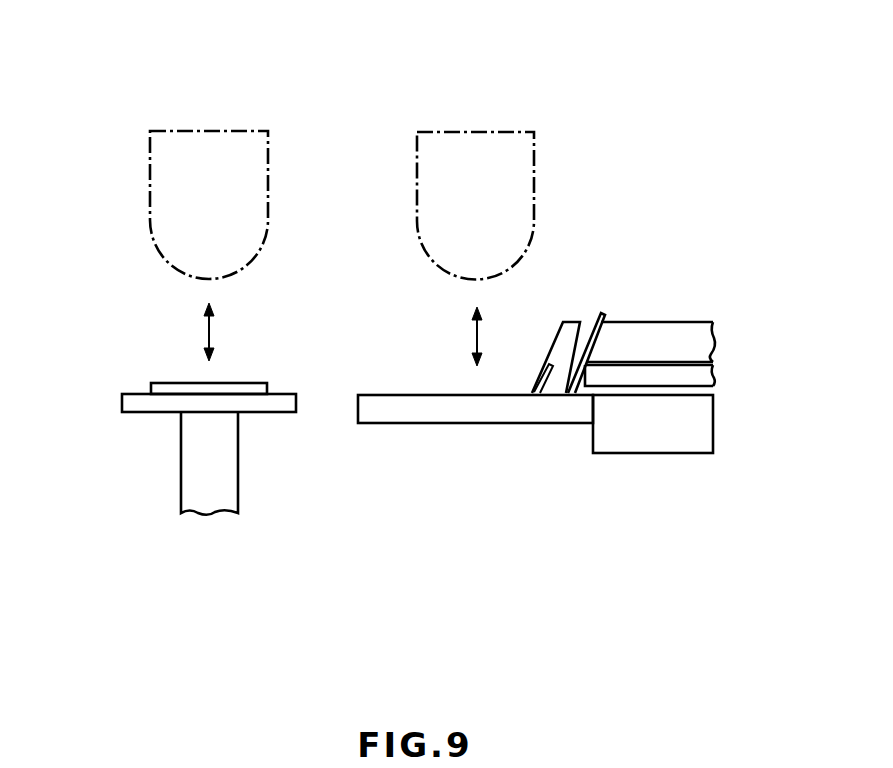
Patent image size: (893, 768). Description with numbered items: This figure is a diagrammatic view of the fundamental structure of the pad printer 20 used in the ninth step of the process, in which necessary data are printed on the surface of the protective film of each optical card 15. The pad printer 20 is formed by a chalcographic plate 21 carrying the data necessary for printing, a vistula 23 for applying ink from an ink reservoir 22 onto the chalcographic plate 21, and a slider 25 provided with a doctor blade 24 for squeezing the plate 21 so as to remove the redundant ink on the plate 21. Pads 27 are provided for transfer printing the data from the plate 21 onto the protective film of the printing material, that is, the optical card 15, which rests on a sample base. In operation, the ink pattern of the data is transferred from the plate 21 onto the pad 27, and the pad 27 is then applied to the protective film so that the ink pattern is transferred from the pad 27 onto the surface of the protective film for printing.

The optical card 15 is at (168, 383).
The pad printer 20 is at (82, 258).
The chalcographic plate 21 is at (495, 412).
The ink reservoir 22 is at (657, 440).
The vistula 23 is at (603, 313).
The doctor blade 24 is at (538, 378).
The slider 25 is at (695, 348).
The pad 27 is at (268, 170).